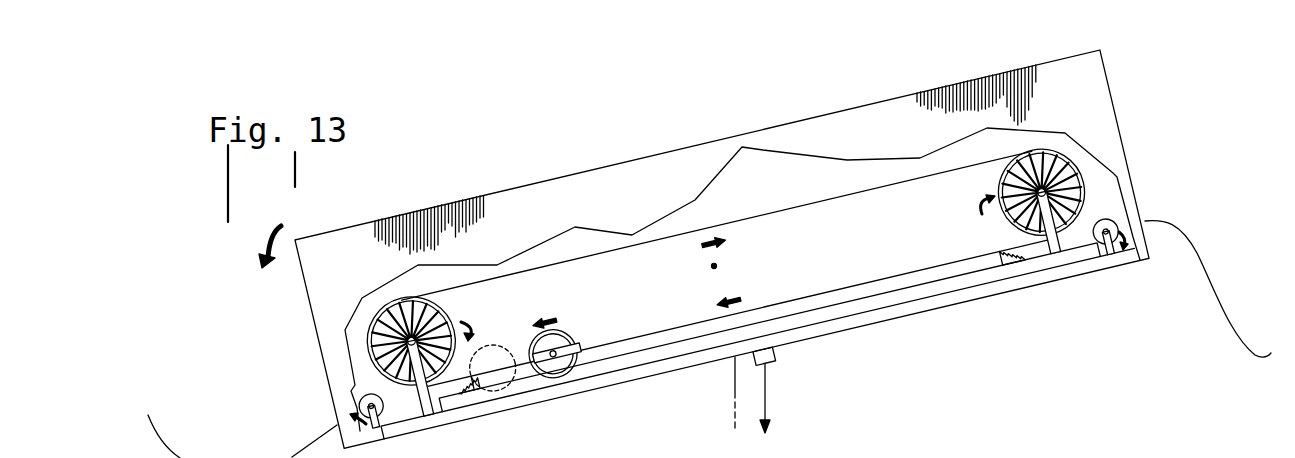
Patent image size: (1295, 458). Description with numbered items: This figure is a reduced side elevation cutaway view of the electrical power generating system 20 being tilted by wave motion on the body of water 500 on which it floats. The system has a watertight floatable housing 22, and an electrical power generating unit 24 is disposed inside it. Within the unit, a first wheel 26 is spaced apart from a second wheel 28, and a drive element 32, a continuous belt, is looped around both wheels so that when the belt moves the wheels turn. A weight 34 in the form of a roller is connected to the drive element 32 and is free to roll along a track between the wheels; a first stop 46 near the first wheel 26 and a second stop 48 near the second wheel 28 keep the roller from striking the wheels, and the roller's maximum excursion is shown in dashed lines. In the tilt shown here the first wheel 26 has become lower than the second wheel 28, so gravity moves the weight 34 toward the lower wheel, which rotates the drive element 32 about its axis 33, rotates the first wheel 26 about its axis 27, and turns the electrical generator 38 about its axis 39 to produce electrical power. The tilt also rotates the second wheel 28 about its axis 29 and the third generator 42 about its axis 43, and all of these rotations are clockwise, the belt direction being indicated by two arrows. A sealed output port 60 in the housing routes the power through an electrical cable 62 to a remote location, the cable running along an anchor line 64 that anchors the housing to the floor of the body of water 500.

The electrical power generating system 20 is at (709, 254).
The floatable housing 22 is at (588, 170).
The electrical power generating unit 24 is at (771, 206).
The first wheel 26 is at (445, 312).
The axis 27 is at (412, 337).
The second wheel 28 is at (1000, 193).
The axis 29 is at (1039, 190).
The drive element 32 is at (689, 233).
The axis 33 is at (717, 266).
The weight 34 is at (571, 347).
The electrical generator 38 is at (358, 407).
The axis 39 is at (372, 410).
The third generator 42 is at (1117, 228).
The axis 43 is at (1107, 240).
The first stop 46 is at (529, 316).
The second stop 48 is at (1003, 257).
The sealed output port 60 is at (773, 356).
The electrical cable 62 is at (769, 396).
The anchor line 64 is at (734, 392).
The body of water 500 is at (230, 457).